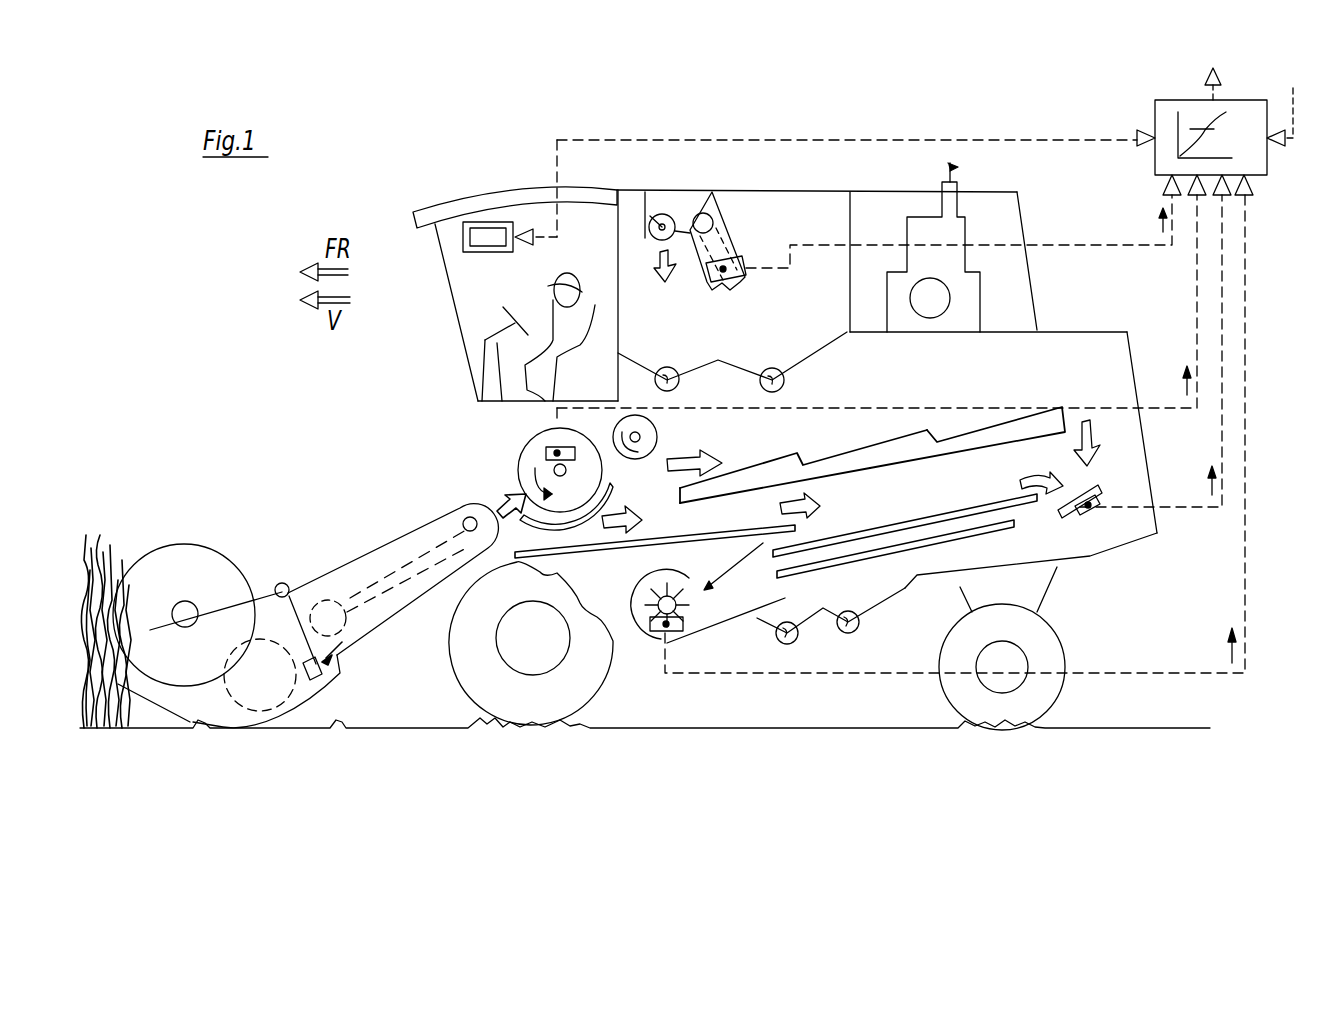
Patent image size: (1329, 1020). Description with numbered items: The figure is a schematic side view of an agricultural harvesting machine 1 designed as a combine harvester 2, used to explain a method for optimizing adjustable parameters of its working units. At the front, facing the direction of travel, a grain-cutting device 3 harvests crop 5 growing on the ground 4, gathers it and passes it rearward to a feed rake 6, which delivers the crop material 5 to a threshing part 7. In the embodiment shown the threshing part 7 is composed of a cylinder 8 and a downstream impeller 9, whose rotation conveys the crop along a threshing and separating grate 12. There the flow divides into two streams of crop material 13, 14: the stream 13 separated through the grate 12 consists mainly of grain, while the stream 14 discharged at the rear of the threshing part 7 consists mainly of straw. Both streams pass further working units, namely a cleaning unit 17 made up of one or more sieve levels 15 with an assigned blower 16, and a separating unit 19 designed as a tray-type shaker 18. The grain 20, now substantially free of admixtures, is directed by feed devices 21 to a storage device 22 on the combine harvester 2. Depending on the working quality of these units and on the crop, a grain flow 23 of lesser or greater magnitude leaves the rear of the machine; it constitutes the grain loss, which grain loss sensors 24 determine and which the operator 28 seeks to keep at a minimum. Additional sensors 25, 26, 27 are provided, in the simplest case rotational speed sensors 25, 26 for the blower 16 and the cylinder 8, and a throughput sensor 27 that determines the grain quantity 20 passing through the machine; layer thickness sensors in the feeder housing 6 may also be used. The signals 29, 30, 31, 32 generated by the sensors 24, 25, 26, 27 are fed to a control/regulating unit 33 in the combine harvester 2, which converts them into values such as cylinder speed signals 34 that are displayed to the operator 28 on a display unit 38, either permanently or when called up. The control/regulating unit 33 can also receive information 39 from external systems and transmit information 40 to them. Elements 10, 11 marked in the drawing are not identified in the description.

The agricultural harvesting machine 1 is at (447, 197).
The combine harvester 2 is at (515, 207).
The grain-cutting device 3 is at (203, 715).
The ground 4 is at (332, 722).
The crop 5 is at (92, 540).
The feed rake 6 is at (360, 572).
The threshing part 7 is at (540, 452).
The cylinder 8 is at (546, 453).
The impeller 9 is at (655, 433).
The threshing drum rotation 10 is at (540, 470).
The threshing unit 11 is at (612, 446).
The threshing and separating grate 12 is at (547, 530).
The stream of crop material 13 is at (620, 530).
The stream of crop material 14 is at (690, 455).
The sieve levels 15 is at (905, 634).
The blower 16 is at (640, 592).
The cleaning unit 17 is at (847, 572).
The tray-type shaker 18 is at (860, 462).
The separating unit 19 is at (967, 437).
The grain 20 is at (660, 277).
The feed devices 21 is at (742, 250).
The storage device 22 is at (752, 331).
The grain flow 23 is at (1055, 478).
The grain loss sensors 24 is at (1077, 518).
The rotational speed sensor 25 is at (653, 640).
The rotational speed sensor 26 is at (548, 440).
The throughput sensor 27 is at (730, 266).
The operator 28 is at (565, 275).
The signal 29 is at (1210, 480).
The signal 30 is at (1185, 380).
The signal 31 is at (1160, 215).
The signal 32 is at (1232, 645).
The control/regulating unit 33 is at (1211, 131).
The cylinder speed signals 34 is at (1063, 119).
The display unit 38 is at (462, 237).
The information from external systems 39 is at (1277, 150).
The information to external systems 40 is at (1205, 74).